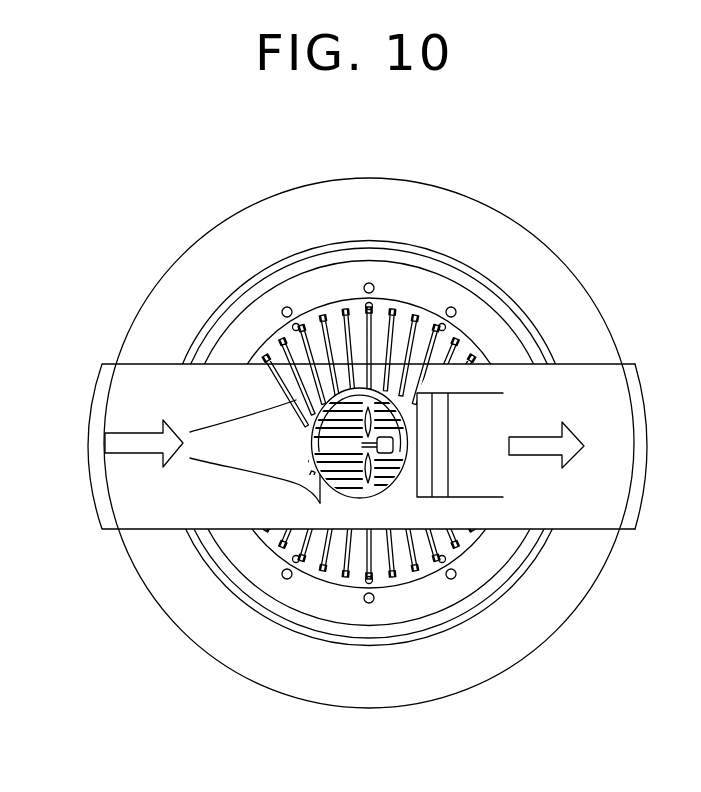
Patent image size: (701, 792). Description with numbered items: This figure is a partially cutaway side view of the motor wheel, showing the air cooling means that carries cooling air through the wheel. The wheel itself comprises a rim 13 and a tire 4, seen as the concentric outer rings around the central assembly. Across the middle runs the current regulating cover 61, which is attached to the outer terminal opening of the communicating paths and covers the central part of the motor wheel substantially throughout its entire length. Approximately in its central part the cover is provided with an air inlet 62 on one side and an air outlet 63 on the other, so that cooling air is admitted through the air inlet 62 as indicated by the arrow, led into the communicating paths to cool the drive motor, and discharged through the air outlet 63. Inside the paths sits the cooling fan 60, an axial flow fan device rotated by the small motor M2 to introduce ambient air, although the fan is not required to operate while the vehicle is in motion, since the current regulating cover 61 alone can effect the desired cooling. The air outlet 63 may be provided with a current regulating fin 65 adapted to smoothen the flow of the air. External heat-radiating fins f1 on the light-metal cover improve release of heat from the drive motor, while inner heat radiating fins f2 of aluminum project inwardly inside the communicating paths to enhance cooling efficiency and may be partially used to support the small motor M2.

The tire 4 is at (165, 617).
The rim 13 is at (262, 583).
The cooling fan 60 is at (375, 470).
The current regulating cover 61 is at (100, 479).
The air inlet 62 is at (262, 458).
The air outlet 63 is at (490, 458).
The current regulating fin 65 is at (448, 437).
The small motor M2 is at (400, 447).
The external heat-radiating fins f1 is at (349, 308).
The inner heat radiating fins f2 is at (367, 463).